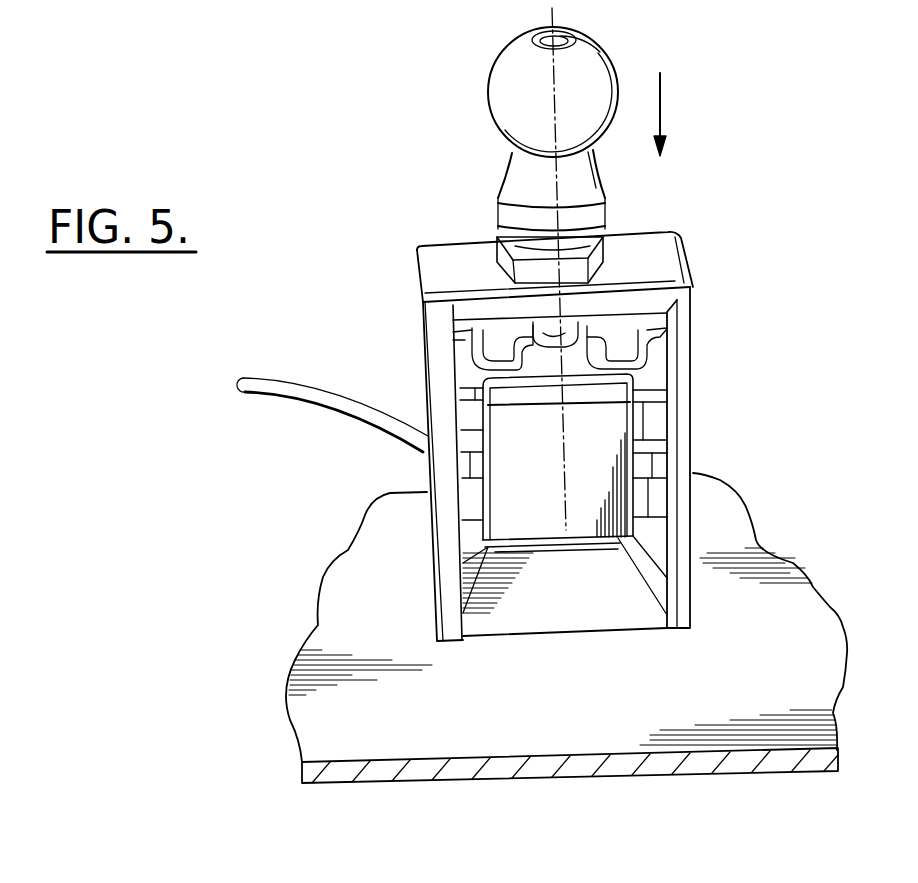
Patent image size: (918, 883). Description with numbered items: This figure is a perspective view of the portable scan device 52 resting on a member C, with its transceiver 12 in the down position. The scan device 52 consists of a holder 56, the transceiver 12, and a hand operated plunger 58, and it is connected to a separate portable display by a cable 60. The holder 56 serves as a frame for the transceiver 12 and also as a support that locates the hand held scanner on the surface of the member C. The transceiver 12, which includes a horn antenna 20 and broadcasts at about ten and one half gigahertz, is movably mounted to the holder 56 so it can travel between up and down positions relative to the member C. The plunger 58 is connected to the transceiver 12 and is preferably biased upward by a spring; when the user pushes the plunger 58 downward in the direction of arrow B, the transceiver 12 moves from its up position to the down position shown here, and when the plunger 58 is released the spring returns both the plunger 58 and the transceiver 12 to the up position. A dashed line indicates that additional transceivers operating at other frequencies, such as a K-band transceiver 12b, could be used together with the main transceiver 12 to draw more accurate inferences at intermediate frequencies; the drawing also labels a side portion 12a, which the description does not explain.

The hand operated plunger 58 is at (490, 79).
The portable scan device 52 is at (554, 436).
The holder 56 is at (684, 260).
The cable 60 is at (274, 397).
The transceiver 12 is at (553, 478).
The left side portion 12a is at (522, 500).
The K-band transceiver 12b is at (600, 450).
The horn antenna 20 is at (572, 625).
The member C is at (338, 633).
The arrow indicating plunger movement B is at (658, 107).